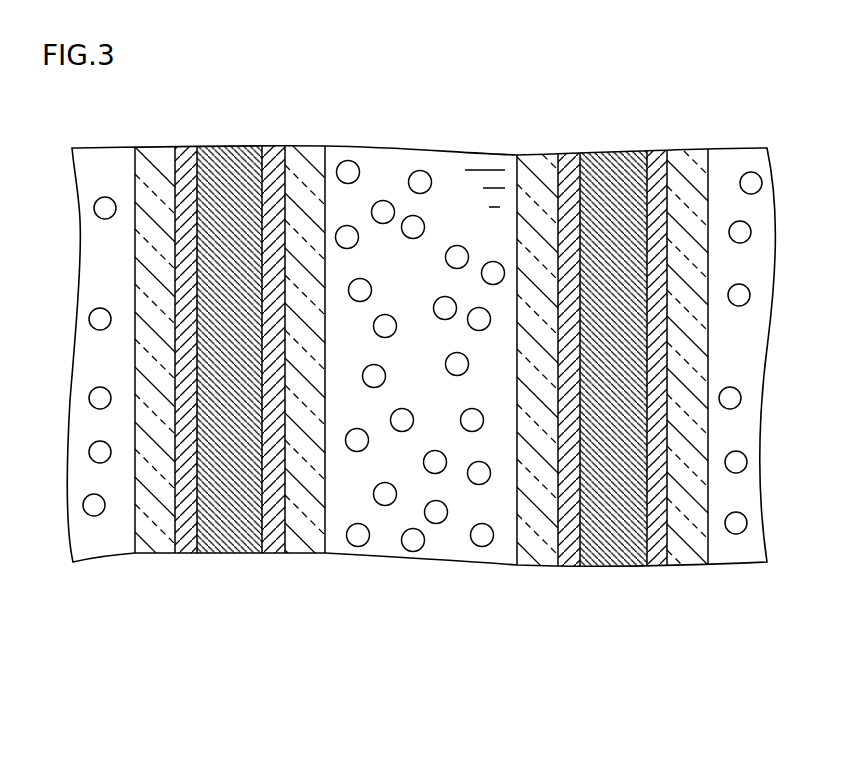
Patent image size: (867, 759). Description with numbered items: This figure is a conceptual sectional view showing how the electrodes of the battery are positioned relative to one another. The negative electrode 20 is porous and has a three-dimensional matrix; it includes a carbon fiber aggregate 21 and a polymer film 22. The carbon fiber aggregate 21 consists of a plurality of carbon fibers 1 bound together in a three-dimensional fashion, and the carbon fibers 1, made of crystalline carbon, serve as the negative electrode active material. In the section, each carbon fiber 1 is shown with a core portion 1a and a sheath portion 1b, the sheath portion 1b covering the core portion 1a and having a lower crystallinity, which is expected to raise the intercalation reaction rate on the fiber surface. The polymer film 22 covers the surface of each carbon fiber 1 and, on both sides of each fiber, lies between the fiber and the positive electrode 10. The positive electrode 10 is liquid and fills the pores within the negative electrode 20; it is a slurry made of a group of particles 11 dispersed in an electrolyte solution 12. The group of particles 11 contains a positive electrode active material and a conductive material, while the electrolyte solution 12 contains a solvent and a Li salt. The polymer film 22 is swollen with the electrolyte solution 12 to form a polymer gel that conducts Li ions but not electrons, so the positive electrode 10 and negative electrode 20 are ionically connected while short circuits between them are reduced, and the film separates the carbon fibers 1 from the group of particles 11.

The carbon fiber 1 is at (421, 400).
The core portion 1a is at (612, 562).
The sheath portion 1b is at (652, 562).
The positive electrode 10 is at (418, 301).
The group of particles 11 is at (419, 170).
The electrolyte solution 12 is at (473, 145).
The negative electrode 20 is at (421, 392).
The carbon fiber aggregate 21 is at (421, 373).
The polymer film 22 is at (690, 562).